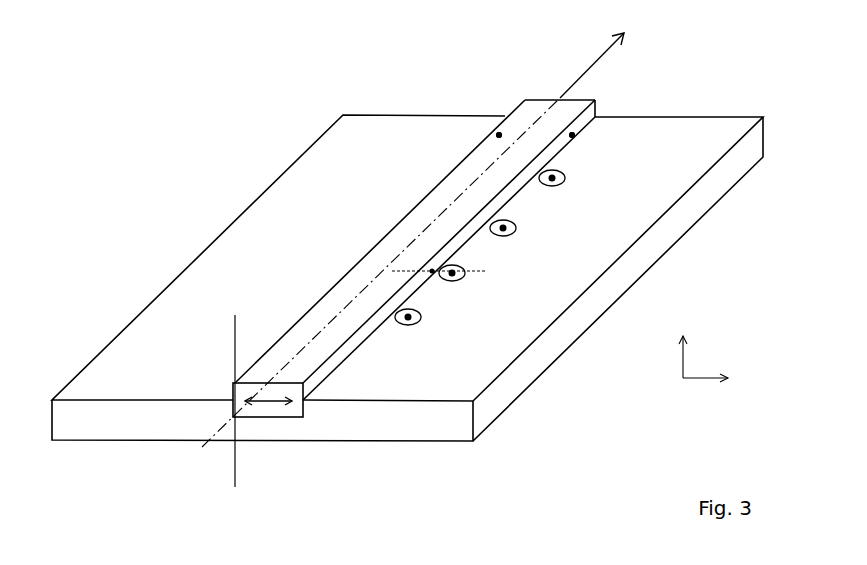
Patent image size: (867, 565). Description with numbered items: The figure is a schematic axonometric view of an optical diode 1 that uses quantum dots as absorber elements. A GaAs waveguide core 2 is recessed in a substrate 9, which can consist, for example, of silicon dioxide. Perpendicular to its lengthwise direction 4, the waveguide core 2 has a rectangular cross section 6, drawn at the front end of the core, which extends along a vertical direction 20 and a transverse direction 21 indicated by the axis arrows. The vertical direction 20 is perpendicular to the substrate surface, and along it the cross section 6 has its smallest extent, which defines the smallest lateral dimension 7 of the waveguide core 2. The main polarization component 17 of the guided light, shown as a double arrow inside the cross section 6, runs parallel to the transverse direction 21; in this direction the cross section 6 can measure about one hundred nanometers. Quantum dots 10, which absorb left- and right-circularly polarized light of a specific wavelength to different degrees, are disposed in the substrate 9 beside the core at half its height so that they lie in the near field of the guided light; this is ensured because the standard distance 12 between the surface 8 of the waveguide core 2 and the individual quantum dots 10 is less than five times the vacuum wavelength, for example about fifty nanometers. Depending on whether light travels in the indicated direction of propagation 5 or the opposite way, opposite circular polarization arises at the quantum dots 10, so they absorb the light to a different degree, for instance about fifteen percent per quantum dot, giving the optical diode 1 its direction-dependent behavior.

The optical diode 1 is at (203, 118).
The waveguide core 2 is at (415, 250).
The lengthwise direction 4 is at (557, 79).
The direction of propagation 5 is at (413, 238).
The rectangular cross section 6 is at (277, 439).
The smallest lateral dimension 7 is at (270, 419).
The surface 8 is at (476, 105).
The substrate 9 is at (268, 261).
The quantum dots 10 is at (539, 231).
The standard distance 12 is at (469, 296).
The main polarization component 17 is at (282, 414).
The vertical direction 20 is at (683, 342).
The transverse direction 21 is at (720, 380).